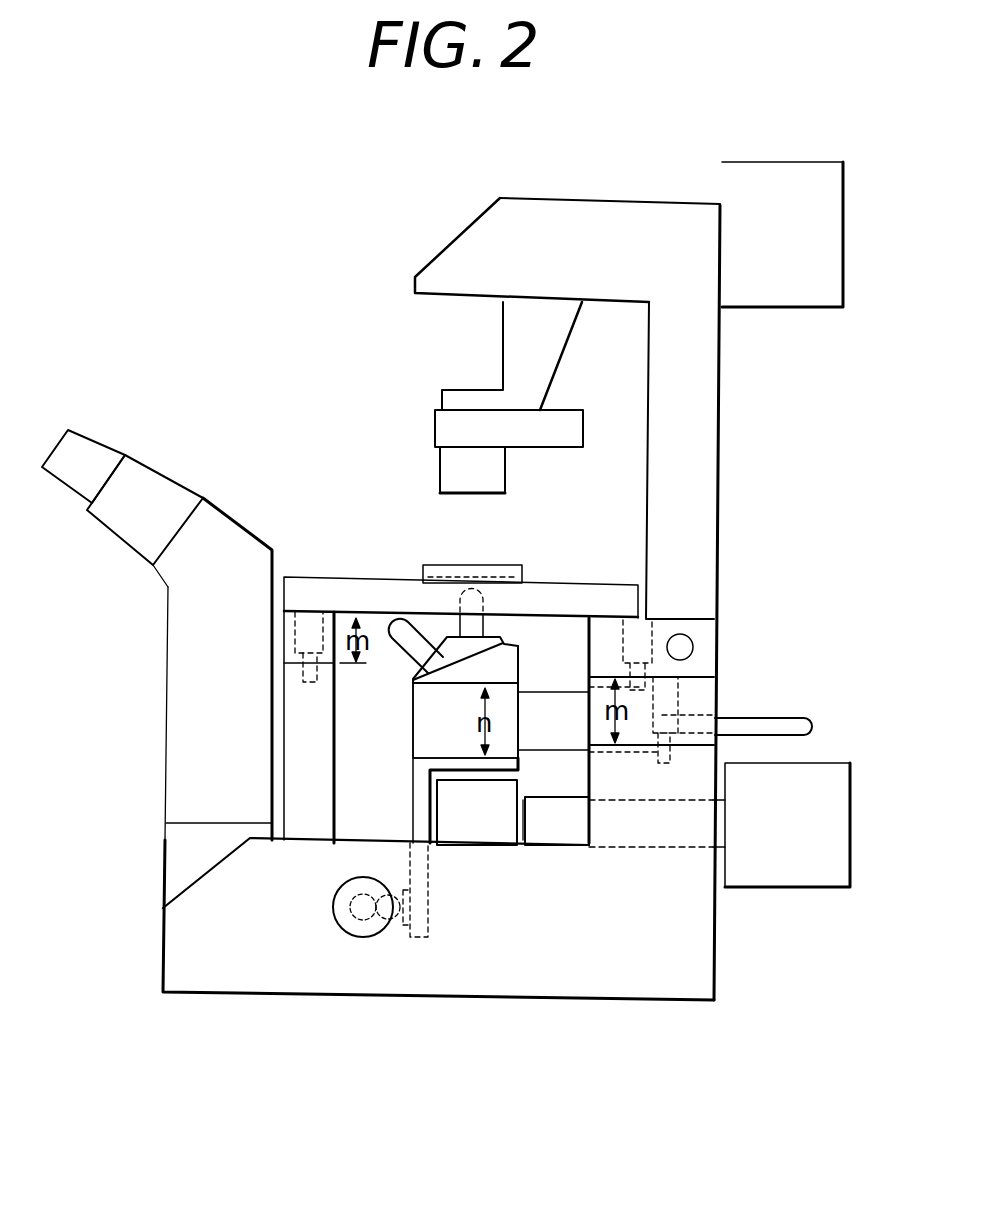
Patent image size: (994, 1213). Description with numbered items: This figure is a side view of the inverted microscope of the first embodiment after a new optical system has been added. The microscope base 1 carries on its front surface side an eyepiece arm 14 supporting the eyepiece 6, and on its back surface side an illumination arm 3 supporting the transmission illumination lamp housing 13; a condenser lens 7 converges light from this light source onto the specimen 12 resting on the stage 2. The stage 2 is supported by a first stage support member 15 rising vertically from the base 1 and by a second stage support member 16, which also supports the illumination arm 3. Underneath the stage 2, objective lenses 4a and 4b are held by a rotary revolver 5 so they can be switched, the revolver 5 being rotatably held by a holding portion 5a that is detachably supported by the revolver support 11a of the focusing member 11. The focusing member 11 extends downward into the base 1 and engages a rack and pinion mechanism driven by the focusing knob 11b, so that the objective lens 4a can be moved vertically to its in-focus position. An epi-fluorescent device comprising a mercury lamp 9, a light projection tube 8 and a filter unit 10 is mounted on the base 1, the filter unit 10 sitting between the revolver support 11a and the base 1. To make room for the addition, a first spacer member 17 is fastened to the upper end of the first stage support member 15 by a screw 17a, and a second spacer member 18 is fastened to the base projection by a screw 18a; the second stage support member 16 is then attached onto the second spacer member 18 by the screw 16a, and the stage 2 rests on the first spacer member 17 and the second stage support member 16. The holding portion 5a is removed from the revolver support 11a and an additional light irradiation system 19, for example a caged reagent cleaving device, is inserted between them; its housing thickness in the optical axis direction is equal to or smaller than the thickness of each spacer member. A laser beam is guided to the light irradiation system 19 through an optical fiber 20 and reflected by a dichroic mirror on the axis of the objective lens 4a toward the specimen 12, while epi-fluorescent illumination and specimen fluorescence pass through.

The microscope base 1 is at (310, 988).
The stage 2 is at (345, 593).
The illumination arm 3 is at (700, 412).
The objective lens 4a is at (460, 628).
The objective lens 4b is at (412, 647).
The rotary revolver 5 is at (500, 636).
The holding portion 5a is at (508, 668).
The eyepiece 6 is at (88, 456).
The condenser lens 7 is at (452, 478).
The light projection tube 8 is at (557, 835).
The mercury lamp 9 is at (810, 880).
The filter unit 10 is at (475, 830).
The focusing member 11 is at (415, 822).
The revolver support 11a is at (437, 762).
The focusing knob 11b is at (333, 907).
The specimen 12 is at (500, 560).
The transmission illumination lamp housing 13 is at (817, 170).
The eyepiece arm 14 is at (183, 723).
The first stage support member 15 is at (297, 777).
The second stage support member 16 is at (712, 628).
The screw 16a is at (652, 662).
The first spacer member 17 is at (290, 622).
The screw 17a is at (297, 637).
The second spacer member 18 is at (712, 697).
The screw 18a is at (663, 765).
The additional light irradiation system 19 is at (432, 725).
The optical fiber 20 is at (800, 716).